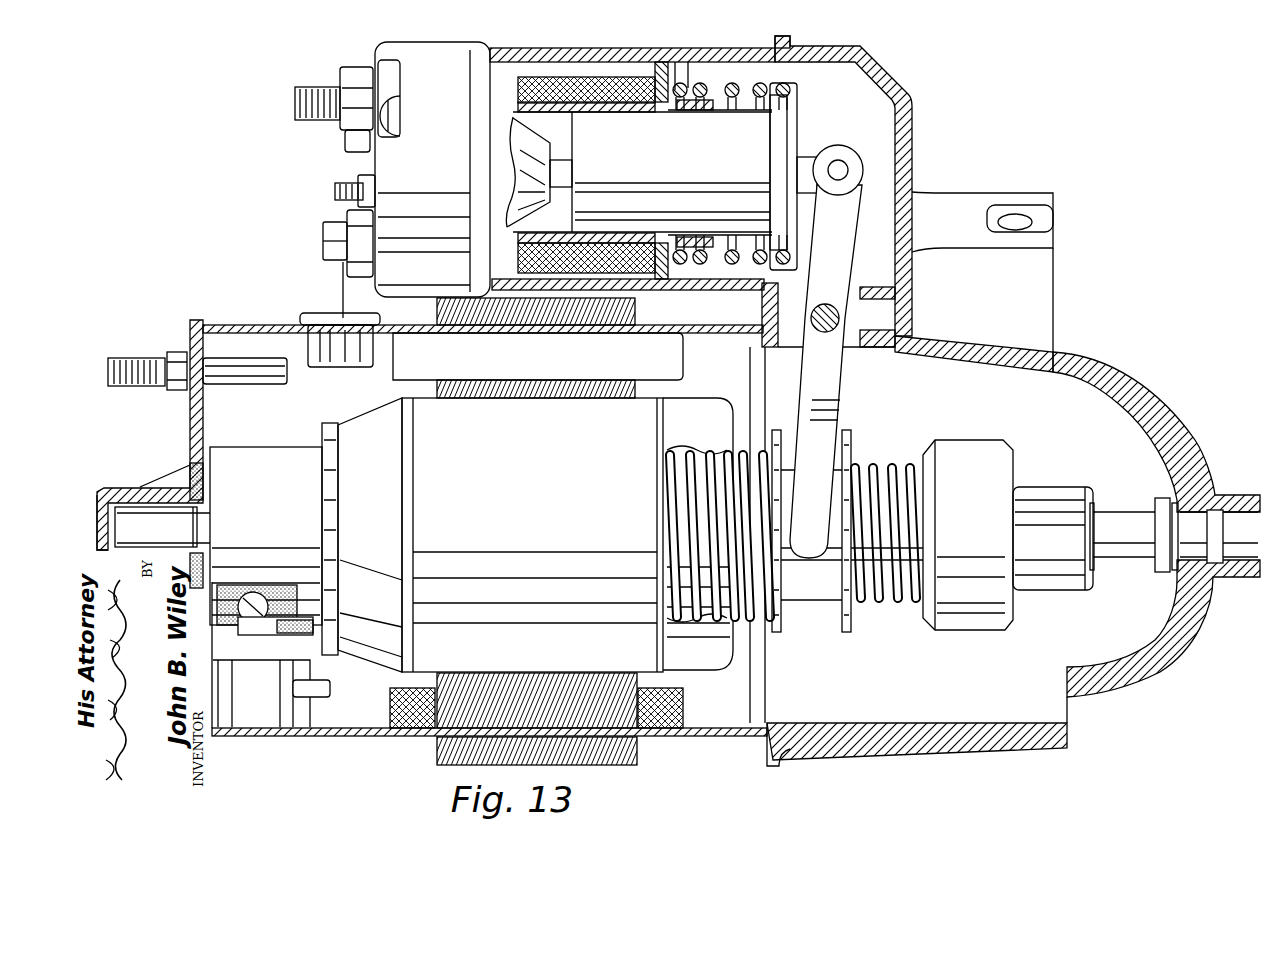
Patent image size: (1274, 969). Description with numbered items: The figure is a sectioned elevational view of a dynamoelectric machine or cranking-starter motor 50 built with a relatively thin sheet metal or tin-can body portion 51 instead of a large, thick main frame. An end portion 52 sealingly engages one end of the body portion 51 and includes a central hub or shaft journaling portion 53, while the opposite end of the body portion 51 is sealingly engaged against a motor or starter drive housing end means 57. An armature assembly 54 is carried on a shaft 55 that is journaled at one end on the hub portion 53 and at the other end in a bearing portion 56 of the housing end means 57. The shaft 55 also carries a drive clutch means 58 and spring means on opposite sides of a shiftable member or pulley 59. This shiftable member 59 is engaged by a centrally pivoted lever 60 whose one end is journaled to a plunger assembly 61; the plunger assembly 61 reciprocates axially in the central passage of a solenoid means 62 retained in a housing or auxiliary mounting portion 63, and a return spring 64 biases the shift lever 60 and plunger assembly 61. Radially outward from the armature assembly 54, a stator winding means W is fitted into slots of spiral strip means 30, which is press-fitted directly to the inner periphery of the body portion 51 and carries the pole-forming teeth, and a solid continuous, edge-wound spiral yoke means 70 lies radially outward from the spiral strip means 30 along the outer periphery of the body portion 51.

The spiral strip means 30 is at (446, 732).
The dynamoelectric machine or cranking-starter motor 50 is at (258, 738).
The body portion 51 is at (325, 738).
The end portion 52 is at (178, 412).
The central hub or shaft journaling portion 53 is at (100, 493).
The armature assembly 54 is at (357, 432).
The shaft 55 is at (148, 513).
The bearing portion 56 is at (1212, 578).
The motor or starter drive housing end means 57 is at (920, 745).
The drive clutch means 58 is at (1010, 614).
The shiftable member or pulley 59 is at (846, 620).
The centrally pivoted lever 60 is at (832, 392).
The plunger assembly 61 is at (780, 132).
The solenoid means 62 is at (617, 90).
The housing or auxiliary mounting portion 63 is at (728, 40).
The return spring 64 is at (701, 84).
The solid continuous spiral yoke means 70 is at (632, 765).
The stator winding means W is at (427, 348).